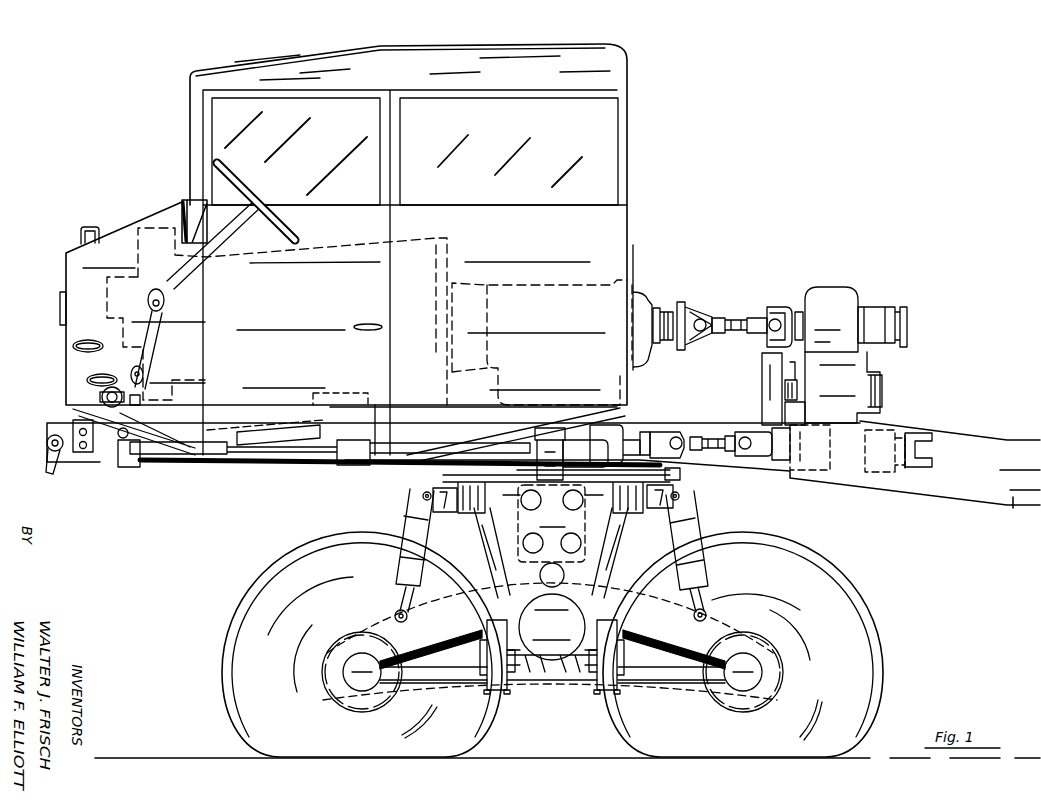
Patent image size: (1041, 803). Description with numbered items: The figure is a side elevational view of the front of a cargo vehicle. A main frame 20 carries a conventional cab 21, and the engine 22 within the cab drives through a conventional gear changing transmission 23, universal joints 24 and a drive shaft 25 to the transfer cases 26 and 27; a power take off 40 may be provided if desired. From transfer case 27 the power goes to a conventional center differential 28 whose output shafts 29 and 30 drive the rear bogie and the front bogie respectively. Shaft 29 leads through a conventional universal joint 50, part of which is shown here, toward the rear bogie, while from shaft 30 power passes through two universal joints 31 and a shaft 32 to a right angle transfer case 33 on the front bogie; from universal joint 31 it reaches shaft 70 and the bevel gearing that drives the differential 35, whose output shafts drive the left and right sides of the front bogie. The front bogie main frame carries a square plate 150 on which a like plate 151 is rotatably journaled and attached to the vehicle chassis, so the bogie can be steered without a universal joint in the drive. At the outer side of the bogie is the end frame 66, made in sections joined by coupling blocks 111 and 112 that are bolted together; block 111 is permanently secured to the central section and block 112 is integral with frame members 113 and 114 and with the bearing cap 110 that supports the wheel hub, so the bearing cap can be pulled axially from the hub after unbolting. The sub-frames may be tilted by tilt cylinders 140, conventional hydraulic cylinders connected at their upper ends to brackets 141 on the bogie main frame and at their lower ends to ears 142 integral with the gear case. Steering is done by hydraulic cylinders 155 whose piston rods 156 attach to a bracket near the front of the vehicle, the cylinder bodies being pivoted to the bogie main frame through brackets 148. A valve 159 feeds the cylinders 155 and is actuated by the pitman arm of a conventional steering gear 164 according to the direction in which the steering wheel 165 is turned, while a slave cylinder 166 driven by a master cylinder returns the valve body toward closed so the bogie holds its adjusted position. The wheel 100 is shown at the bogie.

The main frame 20 is at (543, 466).
The cab 21 is at (628, 236).
The engine 22 is at (445, 250).
The gear changing transmission 23 is at (535, 292).
The universal joints 24 is at (700, 318).
The drive shaft 25 is at (738, 332).
The transfer case 26 is at (840, 292).
The transfer case 27 is at (868, 372).
The center differential 28 is at (870, 430).
The output shaft 29 is at (905, 470).
The output shaft 30 is at (790, 470).
The universal joints 31 is at (670, 432).
The shaft 32 is at (722, 458).
The right angle transfer case 33 is at (621, 430).
The differential 35 is at (586, 520).
The power take off 40 is at (885, 307).
The universal joint 50 is at (920, 436).
The end frame 66 is at (555, 682).
The shaft 70 is at (646, 438).
The wheel 100 is at (845, 602).
The bearing cap 110 is at (352, 686).
The coupling block 111 is at (503, 692).
The coupling block 112 is at (492, 695).
The frame member 113 is at (455, 688).
The frame member 114 is at (450, 653).
The tilt cylinders 140 is at (415, 515).
The brackets 141 is at (427, 491).
The ears 142 is at (395, 614).
The brackets 148 is at (546, 478).
The square plate 150 is at (686, 480).
The plate 151 is at (688, 457).
The hydraulic cylinders 155 is at (382, 462).
The piston rods 156 is at (255, 466).
The valve 159 is at (165, 463).
The steering gear 164 is at (103, 447).
The steering wheel 165 is at (238, 188).
The slave cylinder 166 is at (313, 460).